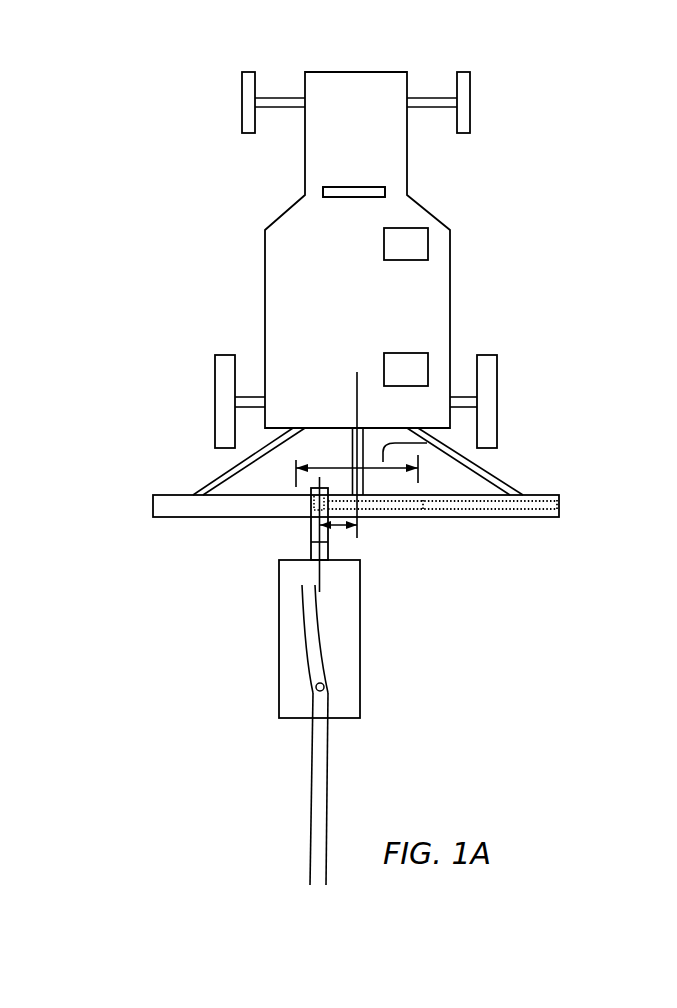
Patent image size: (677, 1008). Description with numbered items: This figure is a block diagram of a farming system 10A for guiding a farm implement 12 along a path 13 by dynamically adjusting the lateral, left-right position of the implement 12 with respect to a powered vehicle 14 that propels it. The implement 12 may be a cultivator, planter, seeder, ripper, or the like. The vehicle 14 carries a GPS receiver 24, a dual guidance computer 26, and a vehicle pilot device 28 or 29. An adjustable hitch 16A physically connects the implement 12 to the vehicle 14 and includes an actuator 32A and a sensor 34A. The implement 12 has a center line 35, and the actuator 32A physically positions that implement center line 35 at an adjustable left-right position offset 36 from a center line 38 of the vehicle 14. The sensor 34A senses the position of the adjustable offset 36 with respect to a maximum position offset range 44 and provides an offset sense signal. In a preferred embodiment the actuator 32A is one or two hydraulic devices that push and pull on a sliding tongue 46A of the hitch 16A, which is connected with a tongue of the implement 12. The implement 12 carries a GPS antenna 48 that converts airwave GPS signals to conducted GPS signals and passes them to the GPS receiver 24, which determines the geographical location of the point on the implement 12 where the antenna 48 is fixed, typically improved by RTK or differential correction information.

The farming system 10A is at (599, 139).
The powered vehicle 14 is at (292, 207).
The vehicle pilot device 28 is at (360, 185).
The vehicle pilot device 29 is at (354, 192).
The dual guidance computer 26 is at (383, 233).
The GPS receiver 24 is at (383, 360).
The center line of the vehicle 38 is at (355, 383).
The maximum position offset range 44 is at (420, 443).
The adjustable hitch 16A is at (175, 495).
The actuator 32A is at (418, 502).
The sensor 34A is at (312, 507).
The sliding tongue 46A is at (310, 517).
The adjustable left-right position offset 36 is at (338, 528).
The farm implement 12 is at (278, 662).
The center line of the implement 35 is at (322, 568).
The GPS antenna 48 is at (327, 684).
The path 13 is at (320, 767).